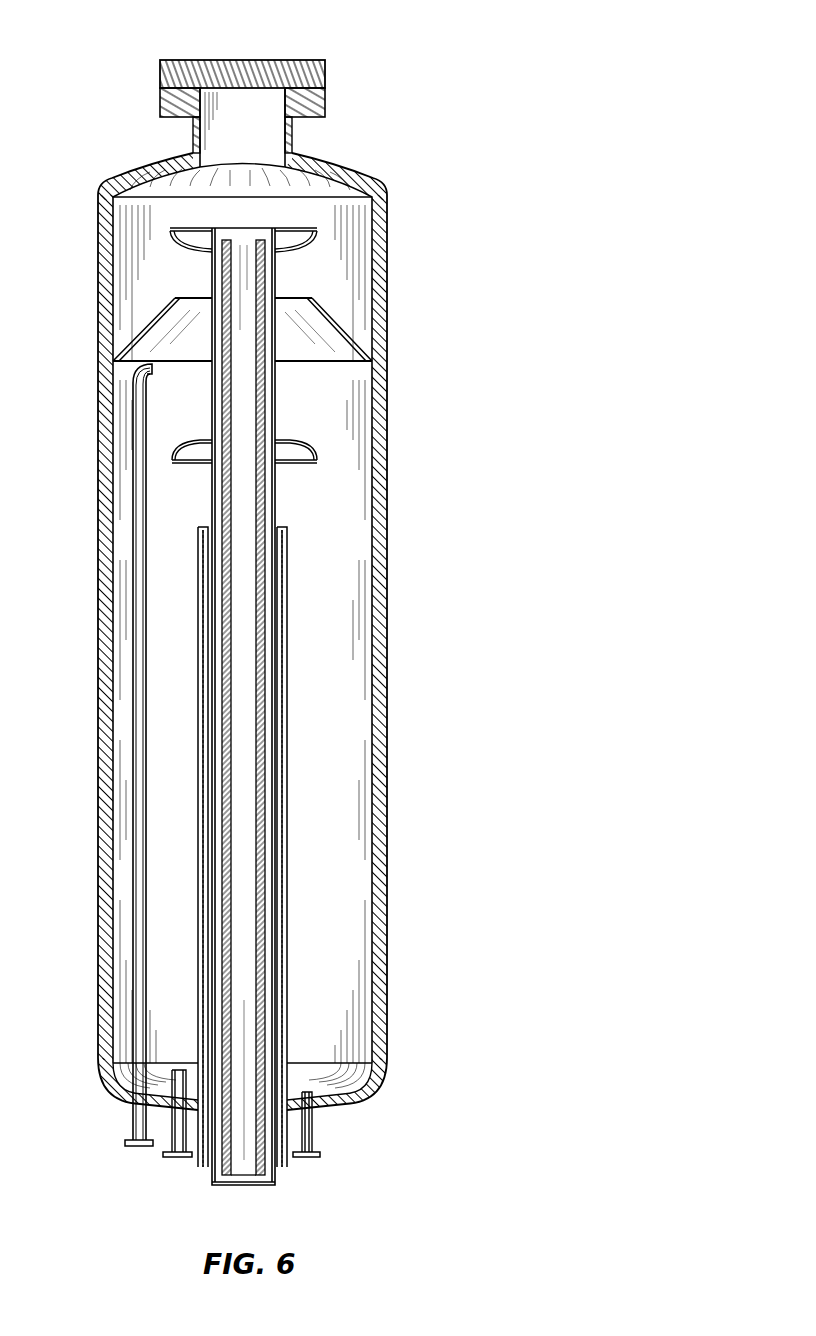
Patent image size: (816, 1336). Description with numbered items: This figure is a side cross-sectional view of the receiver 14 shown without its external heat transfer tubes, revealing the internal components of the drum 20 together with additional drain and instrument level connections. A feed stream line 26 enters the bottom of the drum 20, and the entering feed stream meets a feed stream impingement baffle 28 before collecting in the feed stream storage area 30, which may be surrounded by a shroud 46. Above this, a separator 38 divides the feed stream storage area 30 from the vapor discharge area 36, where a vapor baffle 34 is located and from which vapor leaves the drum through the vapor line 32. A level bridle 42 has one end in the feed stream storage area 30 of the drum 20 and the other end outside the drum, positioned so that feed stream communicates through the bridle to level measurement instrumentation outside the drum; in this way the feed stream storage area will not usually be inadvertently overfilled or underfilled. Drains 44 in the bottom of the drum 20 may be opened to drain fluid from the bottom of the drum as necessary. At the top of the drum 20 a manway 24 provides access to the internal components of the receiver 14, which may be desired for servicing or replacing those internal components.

The receiver 14 is at (427, 45).
The drum 20 is at (98, 420).
The manway 24 is at (185, 60).
The feed stream line 26 is at (277, 1168).
The feed stream impingement baffle 28 is at (318, 452).
The feed stream storage area 30 is at (350, 598).
The vapor line 32 is at (225, 1187).
The vapor baffle 34 is at (172, 233).
The vapor discharge area 36 is at (378, 244).
The separator 38 is at (343, 325).
The level bridle 42 is at (133, 532).
The drains 44 is at (163, 1153).
The shroud 46 is at (353, 977).